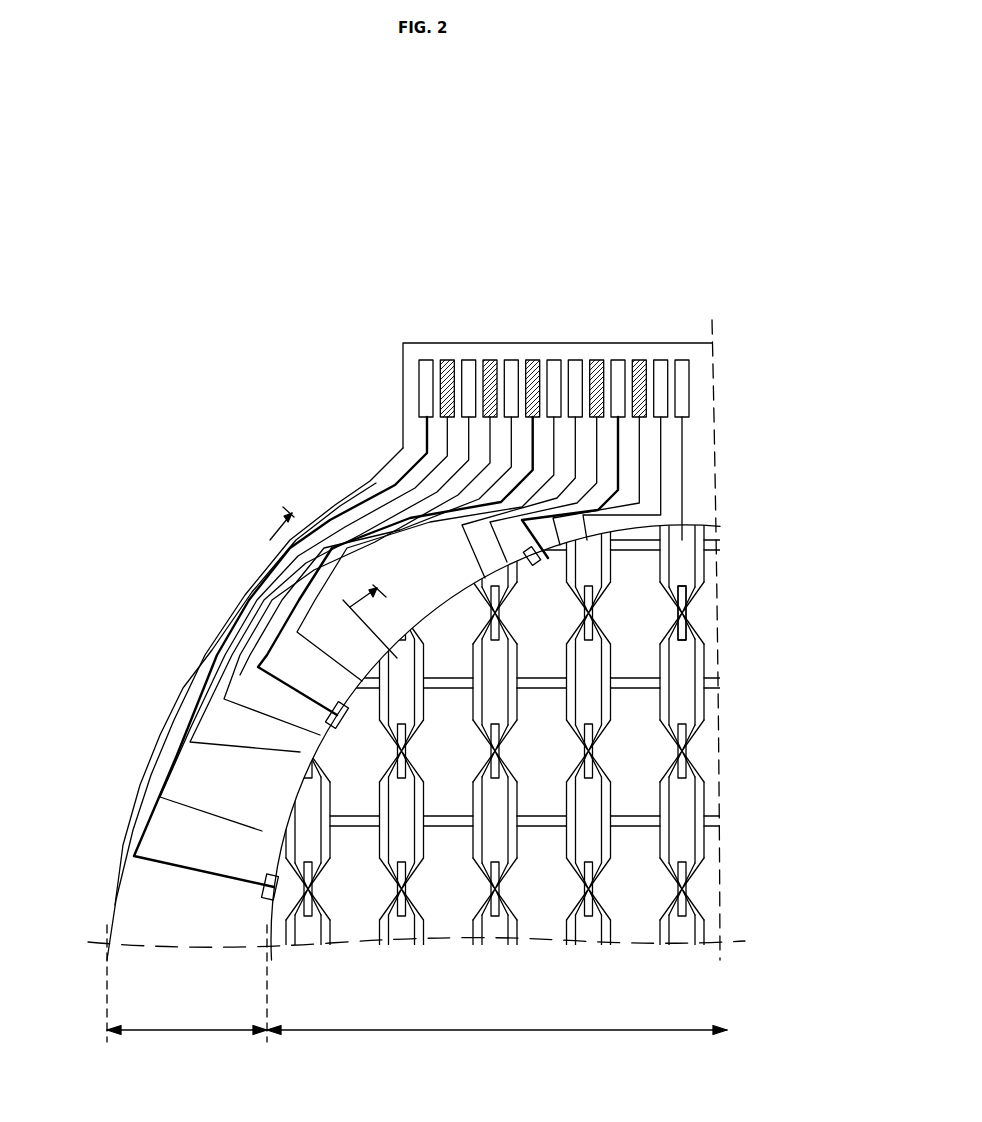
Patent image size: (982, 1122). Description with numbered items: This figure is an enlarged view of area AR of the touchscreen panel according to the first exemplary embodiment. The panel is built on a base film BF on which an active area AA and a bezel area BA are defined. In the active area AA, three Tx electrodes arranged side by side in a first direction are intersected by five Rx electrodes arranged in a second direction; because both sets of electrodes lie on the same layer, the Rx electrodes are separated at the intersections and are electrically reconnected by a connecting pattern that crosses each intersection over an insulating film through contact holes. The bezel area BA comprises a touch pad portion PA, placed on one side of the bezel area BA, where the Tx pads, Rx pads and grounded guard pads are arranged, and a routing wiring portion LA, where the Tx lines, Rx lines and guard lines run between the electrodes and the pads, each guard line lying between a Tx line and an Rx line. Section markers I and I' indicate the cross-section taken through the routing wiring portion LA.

The area AR is at (292, 132).
The touch pad portion PA is at (714, 356).
The base film BF is at (107, 915).
The routing wiring portion LA is at (118, 877).
The bezel area BA is at (187, 992).
The active area AA is at (497, 1043).
The section line I is at (277, 523).
The section line I' is at (368, 607).